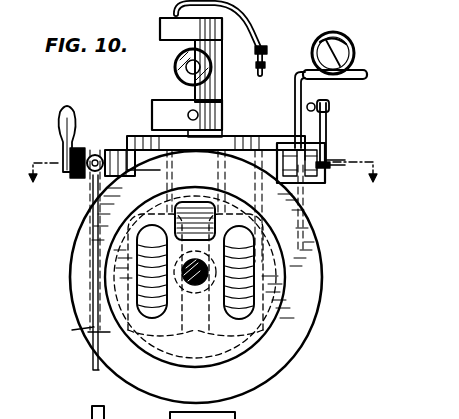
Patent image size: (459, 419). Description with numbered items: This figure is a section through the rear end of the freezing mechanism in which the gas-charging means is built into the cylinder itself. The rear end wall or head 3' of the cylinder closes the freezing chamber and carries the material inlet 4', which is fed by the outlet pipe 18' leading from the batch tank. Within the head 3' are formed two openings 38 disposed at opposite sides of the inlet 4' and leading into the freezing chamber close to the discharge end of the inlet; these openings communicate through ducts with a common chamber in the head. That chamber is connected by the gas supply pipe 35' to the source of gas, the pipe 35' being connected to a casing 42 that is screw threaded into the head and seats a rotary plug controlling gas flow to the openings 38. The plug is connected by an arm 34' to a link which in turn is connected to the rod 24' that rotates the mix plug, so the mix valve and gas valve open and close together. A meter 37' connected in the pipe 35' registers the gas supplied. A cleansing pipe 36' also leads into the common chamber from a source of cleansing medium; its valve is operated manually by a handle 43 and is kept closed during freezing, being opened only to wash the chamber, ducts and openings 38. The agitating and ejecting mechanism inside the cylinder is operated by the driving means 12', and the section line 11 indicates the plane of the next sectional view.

The rear end wall or head 3' is at (207, 277).
The cleansing medium pipe 36' is at (164, 277).
The driving means 12' is at (195, 283).
The inlet 4' is at (203, 221).
The openings 38 is at (242, 268).
The handle 43 is at (60, 130).
The outlet pipe 18' is at (179, 77).
The rod 24' is at (221, 45).
The meter 37' is at (346, 55).
The gas supply pipe 35' is at (275, 110).
The casing 42 is at (285, 150).
The arm 34' is at (335, 134).
The section line 11 is at (203, 182).